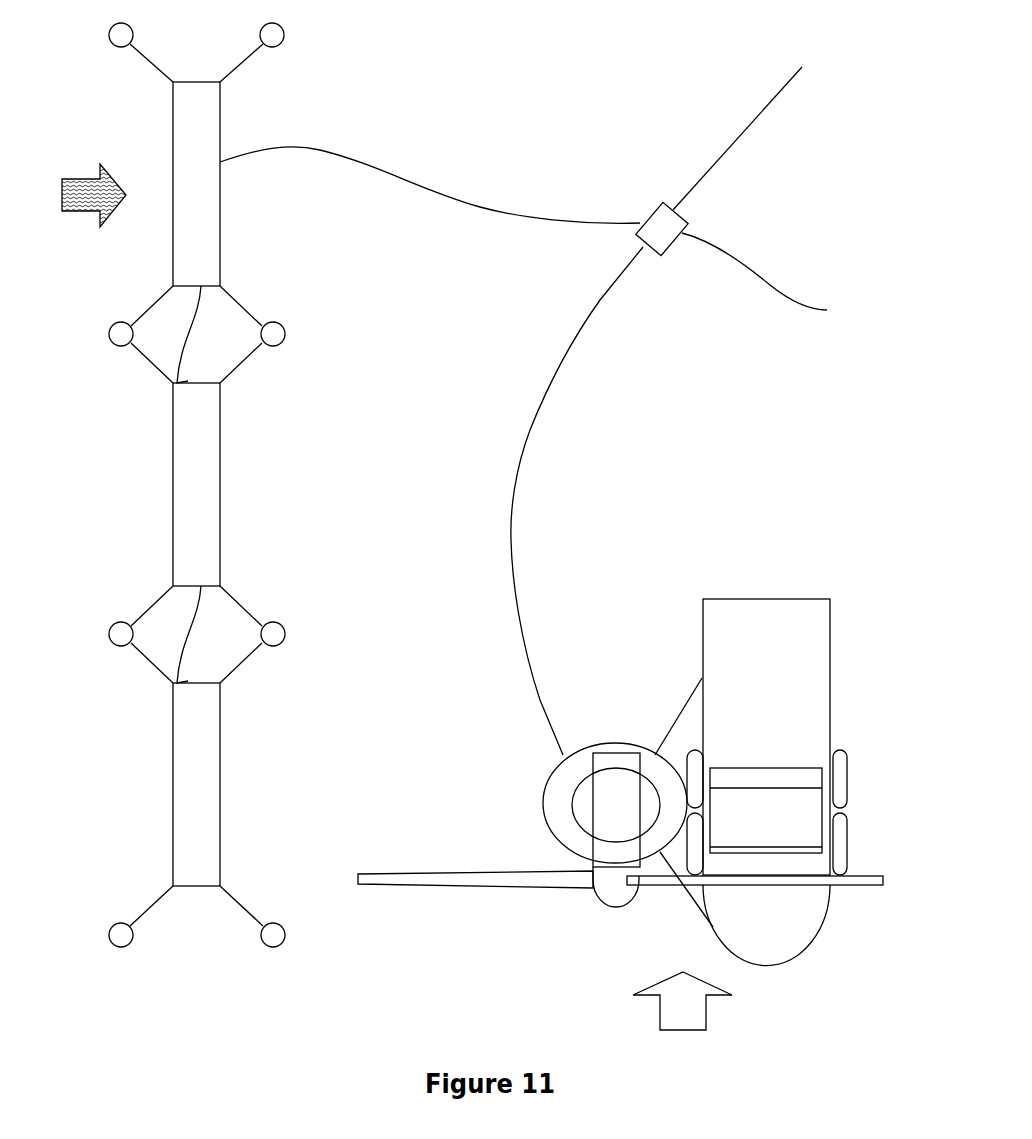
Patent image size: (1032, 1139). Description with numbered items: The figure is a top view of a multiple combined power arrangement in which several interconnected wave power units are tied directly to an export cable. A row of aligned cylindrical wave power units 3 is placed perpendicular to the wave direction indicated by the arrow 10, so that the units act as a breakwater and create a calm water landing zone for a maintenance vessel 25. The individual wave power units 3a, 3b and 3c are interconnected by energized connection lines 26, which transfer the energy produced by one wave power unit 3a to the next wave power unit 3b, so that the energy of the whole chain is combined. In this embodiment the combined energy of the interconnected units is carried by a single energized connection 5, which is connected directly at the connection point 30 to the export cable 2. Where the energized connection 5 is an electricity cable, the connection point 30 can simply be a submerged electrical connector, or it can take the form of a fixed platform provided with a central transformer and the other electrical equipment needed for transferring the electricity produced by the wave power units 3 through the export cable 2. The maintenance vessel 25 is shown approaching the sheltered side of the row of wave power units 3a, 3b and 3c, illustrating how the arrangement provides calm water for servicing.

The wave direction arrow 10 is at (94, 192).
The cylindrical wave power unit 3 is at (229, 485).
The wave power unit 3a is at (185, 137).
The wave power unit 3b is at (193, 441).
The wave power unit 3c is at (193, 765).
The energized connection line 26 is at (200, 309).
The energized connection 5 is at (401, 168).
The export cable 2 is at (742, 135).
The connection point 30 is at (653, 222).
The maintenance vessel 25 is at (808, 567).